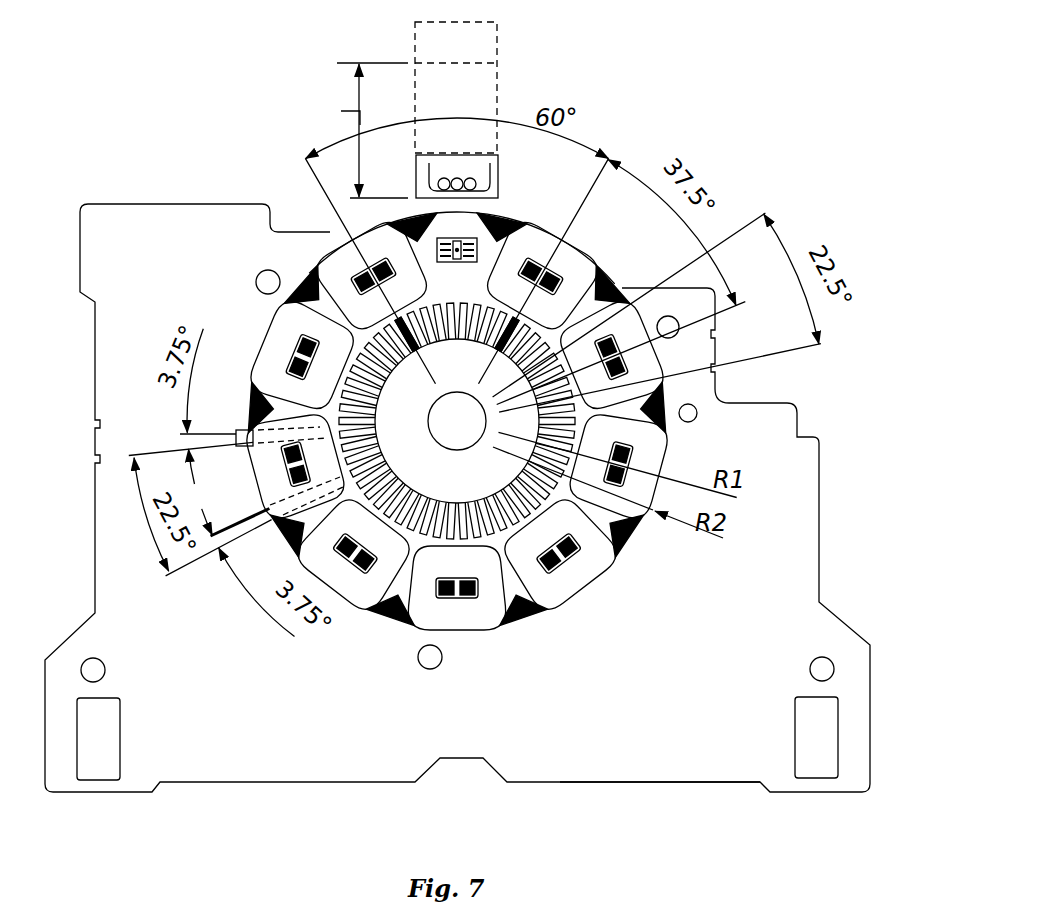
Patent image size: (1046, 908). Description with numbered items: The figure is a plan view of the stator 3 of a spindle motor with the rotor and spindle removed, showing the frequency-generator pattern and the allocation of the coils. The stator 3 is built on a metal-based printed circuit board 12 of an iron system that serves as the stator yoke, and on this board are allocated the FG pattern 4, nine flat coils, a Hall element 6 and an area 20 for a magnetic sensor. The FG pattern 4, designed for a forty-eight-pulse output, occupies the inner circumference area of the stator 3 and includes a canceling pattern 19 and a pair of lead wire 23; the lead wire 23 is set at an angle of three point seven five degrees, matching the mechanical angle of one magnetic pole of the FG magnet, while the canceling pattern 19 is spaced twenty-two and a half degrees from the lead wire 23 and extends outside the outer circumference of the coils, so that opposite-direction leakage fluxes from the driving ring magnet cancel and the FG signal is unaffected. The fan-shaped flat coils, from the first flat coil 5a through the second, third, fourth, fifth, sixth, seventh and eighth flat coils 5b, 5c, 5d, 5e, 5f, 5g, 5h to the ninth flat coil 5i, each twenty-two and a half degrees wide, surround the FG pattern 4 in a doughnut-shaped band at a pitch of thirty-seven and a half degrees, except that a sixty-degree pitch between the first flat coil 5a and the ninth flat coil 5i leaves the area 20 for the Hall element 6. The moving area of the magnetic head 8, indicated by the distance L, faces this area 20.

The stator 3 is at (141, 199).
The FG pattern 4 is at (423, 530).
The first flat coil 5a is at (578, 277).
The second flat coil 5b is at (647, 370).
The third flat coil 5c is at (650, 452).
The fourth flat coil 5d is at (582, 575).
The fifth flat coil 5e is at (477, 621).
The sixth flat coil 5f is at (377, 592).
The seventh flat coil 5g is at (270, 470).
The eighth flat coil 5h is at (278, 333).
The ninth flat coil 5i is at (342, 265).
The Hall element 6 is at (458, 238).
The magnetic head 8 is at (494, 168).
The metal-based printed circuit board 12 is at (690, 776).
The canceling pattern 19 is at (242, 430).
The area for a magnetic sensor 20 is at (457, 285).
The lead wire 23 is at (265, 530).